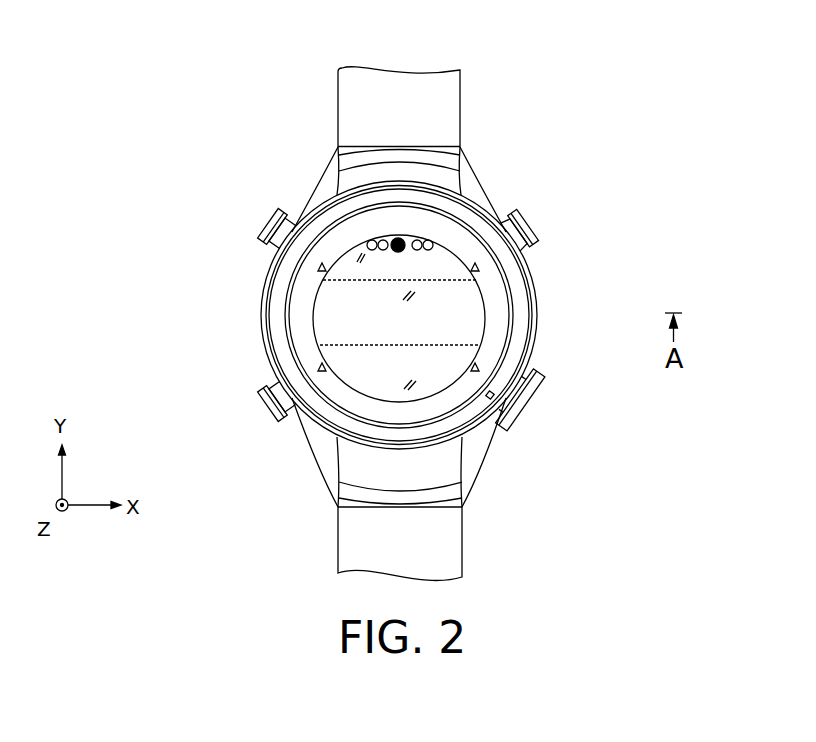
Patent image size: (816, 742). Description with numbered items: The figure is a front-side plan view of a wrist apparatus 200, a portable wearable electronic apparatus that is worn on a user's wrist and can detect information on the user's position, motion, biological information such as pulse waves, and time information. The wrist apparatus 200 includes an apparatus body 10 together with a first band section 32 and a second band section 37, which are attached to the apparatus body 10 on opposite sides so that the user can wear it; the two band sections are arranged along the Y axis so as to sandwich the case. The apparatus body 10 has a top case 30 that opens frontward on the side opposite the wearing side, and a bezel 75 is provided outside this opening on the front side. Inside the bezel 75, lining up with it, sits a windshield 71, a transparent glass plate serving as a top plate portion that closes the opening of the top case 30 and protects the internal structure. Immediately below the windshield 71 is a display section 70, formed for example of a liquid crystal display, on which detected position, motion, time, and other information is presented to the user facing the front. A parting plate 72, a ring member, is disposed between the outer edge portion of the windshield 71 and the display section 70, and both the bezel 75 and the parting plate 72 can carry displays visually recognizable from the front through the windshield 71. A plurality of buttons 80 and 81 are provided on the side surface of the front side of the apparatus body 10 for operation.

The wrist apparatus 200 is at (145, 155).
The apparatus body 10 is at (507, 189).
The top case 30 is at (470, 456).
The first band section 32 is at (456, 103).
The second band section 37 is at (450, 548).
The display section 70 is at (474, 297).
The windshield 71 is at (357, 251).
The parting plate 72 is at (495, 340).
The bezel 75 is at (268, 288).
The button 80 is at (531, 251).
The button 81 is at (254, 225).